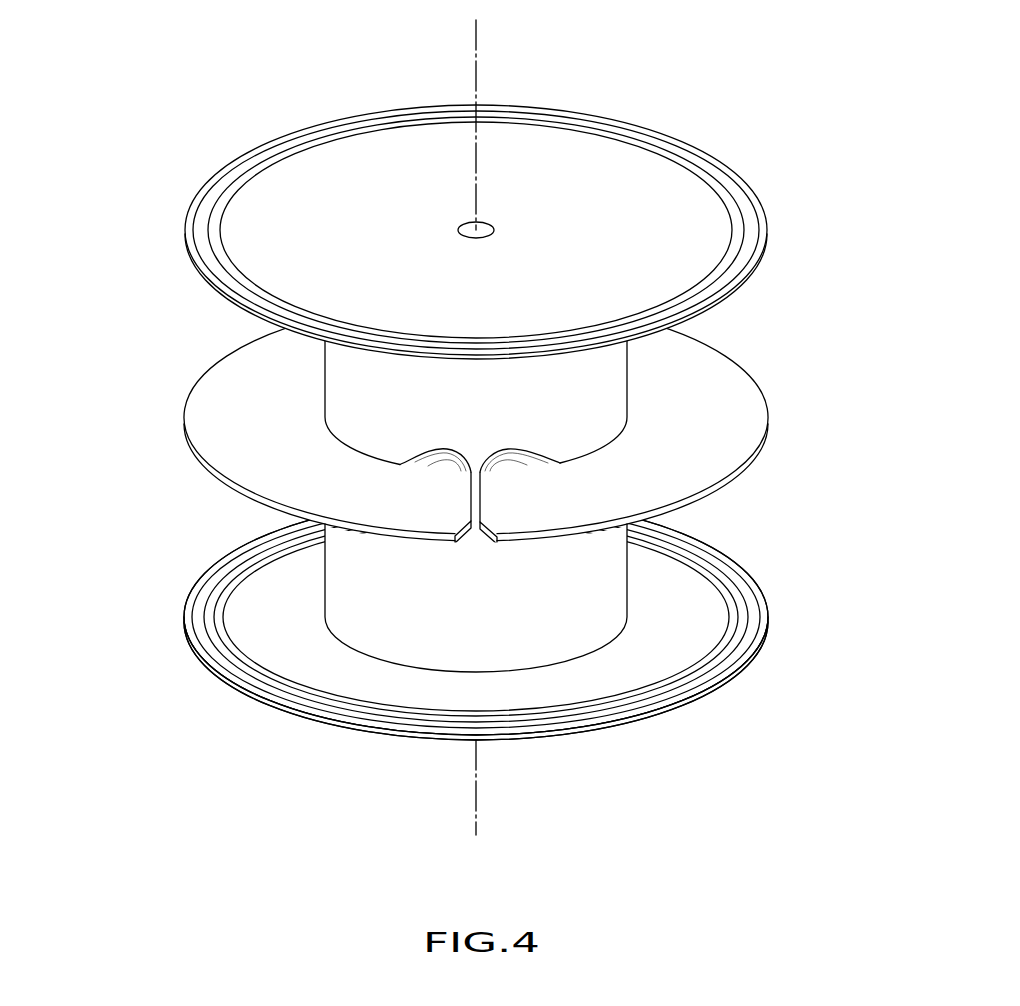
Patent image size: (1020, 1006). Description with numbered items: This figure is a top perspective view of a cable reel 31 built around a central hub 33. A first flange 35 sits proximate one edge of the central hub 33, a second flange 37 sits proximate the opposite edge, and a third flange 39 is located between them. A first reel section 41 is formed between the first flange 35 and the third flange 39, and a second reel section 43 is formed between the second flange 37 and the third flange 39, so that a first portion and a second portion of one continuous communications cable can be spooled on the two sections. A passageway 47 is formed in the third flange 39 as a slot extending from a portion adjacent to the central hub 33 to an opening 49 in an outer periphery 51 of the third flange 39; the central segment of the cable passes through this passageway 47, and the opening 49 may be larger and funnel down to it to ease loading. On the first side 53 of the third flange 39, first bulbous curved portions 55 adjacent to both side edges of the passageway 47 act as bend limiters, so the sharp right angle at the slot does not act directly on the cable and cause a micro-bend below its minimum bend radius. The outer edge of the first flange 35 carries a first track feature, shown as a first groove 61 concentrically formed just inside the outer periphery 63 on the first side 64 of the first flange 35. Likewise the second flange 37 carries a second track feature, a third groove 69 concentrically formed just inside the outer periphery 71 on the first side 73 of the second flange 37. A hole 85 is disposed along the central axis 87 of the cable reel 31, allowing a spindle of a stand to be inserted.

The cable reel 31 is at (110, 163).
The central hub 33 is at (396, 602).
The first flange 35 is at (460, 211).
The second flange 37 is at (474, 619).
The third flange 39 is at (487, 452).
The first reel section 41 is at (203, 337).
The second reel section 43 is at (200, 514).
The passageway 47 is at (477, 495).
The opening 49 is at (483, 540).
The outer periphery 51 is at (712, 488).
The first side 53 is at (692, 455).
The first bulbous curved portions 55 is at (443, 448).
The first groove 61 is at (210, 228).
The outer periphery 63 is at (755, 197).
The first side 64 is at (579, 278).
The third groove 69 is at (215, 630).
The outer periphery 71 is at (187, 607).
The first side 73 is at (606, 683).
The hole 85 is at (487, 225).
The central axis 87 is at (475, 67).